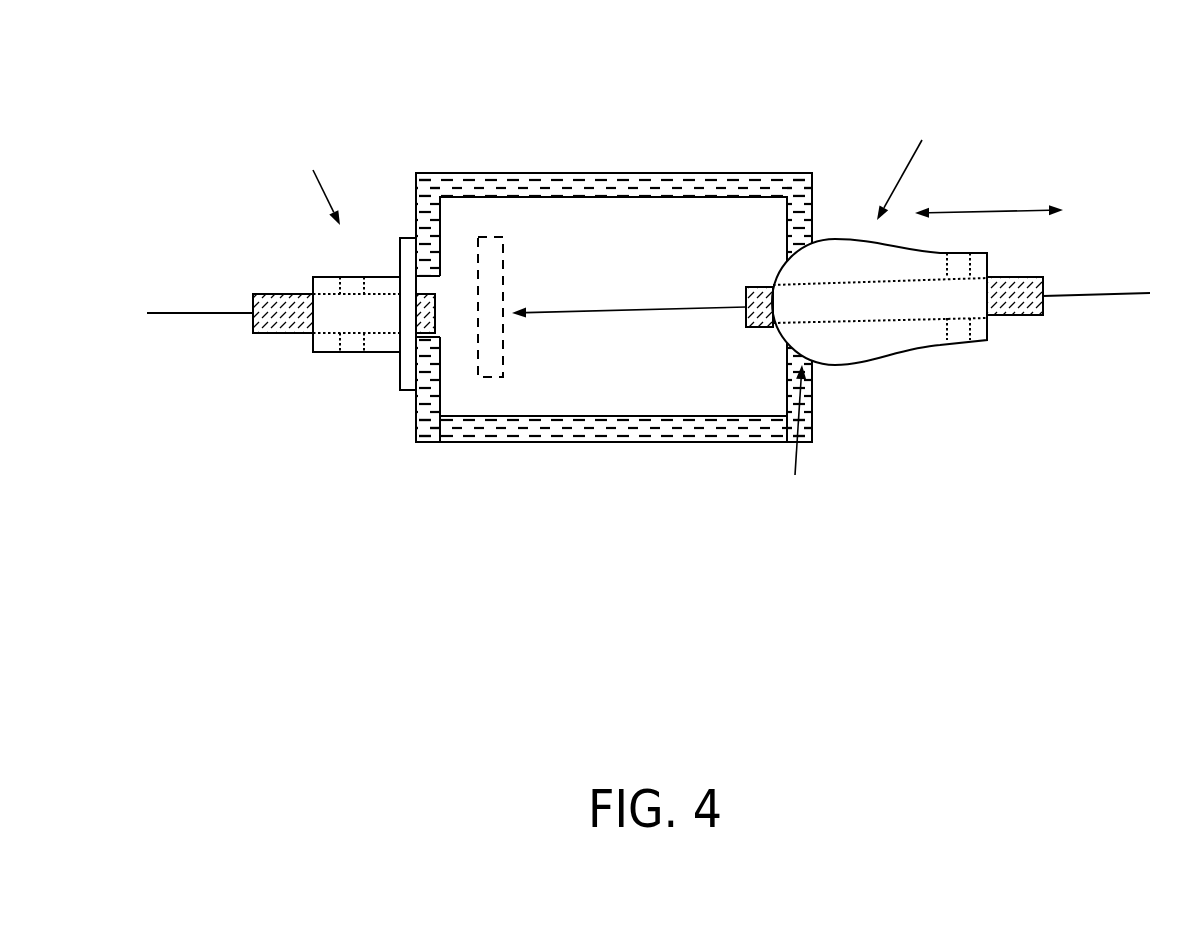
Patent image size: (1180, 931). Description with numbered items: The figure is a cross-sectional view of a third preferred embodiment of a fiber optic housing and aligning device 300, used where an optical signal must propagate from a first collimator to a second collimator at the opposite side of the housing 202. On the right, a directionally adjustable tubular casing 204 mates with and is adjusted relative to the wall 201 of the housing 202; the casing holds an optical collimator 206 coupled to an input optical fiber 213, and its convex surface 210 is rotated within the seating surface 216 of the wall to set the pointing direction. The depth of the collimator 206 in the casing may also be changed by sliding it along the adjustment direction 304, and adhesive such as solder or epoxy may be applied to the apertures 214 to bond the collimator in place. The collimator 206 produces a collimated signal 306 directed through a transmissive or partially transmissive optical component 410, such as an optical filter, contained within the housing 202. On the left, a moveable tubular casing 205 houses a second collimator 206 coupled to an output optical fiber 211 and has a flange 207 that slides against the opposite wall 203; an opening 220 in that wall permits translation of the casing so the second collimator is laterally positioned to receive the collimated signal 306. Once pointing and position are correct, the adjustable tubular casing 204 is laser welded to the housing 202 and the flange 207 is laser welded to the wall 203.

The fiber optic housing and aligning device 300 is at (425, 35).
The wall 201 is at (812, 432).
The housing 202 is at (682, 172).
The opposite wall 203 is at (412, 428).
The directionally adjustable tubular casing 204 is at (919, 165).
The moveable tubular casing 205 is at (315, 183).
The collimator 206 is at (257, 337).
The flange 207 is at (400, 240).
The convex surface 210 is at (765, 253).
The output optical fiber 211 is at (167, 313).
The input optical fiber 213 is at (1115, 293).
The apertures 214 is at (353, 285).
The seating surface 216 is at (785, 435).
The opening 220 is at (456, 268).
The adjustment direction 304 is at (1012, 210).
The collimated signal 306 is at (625, 310).
The optical component 410 is at (503, 358).